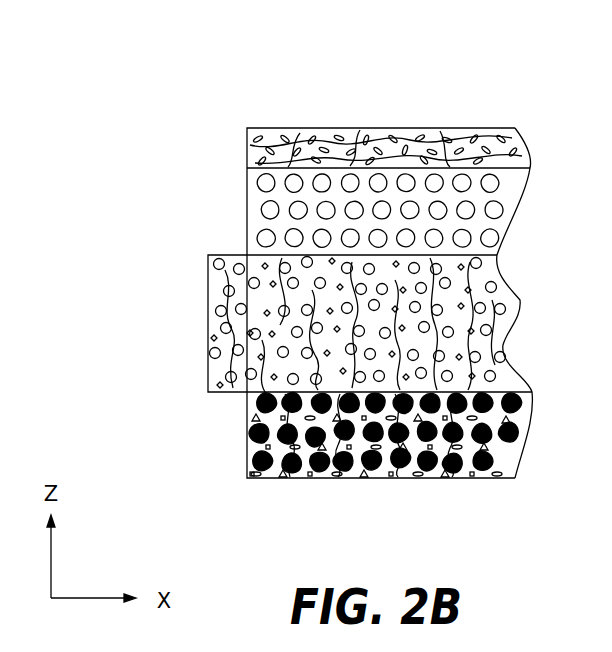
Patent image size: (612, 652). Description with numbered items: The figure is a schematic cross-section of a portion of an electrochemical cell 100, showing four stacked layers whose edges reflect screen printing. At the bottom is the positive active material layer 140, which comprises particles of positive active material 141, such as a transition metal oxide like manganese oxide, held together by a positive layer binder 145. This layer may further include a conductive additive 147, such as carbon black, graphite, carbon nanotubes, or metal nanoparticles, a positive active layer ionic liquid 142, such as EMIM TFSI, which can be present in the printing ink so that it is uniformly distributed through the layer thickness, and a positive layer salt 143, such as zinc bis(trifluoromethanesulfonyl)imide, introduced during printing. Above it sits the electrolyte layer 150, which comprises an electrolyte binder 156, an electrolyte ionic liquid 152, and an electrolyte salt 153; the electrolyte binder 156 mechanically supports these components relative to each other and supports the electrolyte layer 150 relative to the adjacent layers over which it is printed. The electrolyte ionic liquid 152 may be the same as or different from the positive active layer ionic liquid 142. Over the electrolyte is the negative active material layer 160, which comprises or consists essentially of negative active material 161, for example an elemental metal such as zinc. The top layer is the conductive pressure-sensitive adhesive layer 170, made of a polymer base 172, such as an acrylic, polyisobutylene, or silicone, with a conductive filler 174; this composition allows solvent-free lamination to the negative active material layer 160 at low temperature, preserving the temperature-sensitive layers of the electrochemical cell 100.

The electrochemical cell 100 is at (176, 92).
The conductive pressure-sensitive adhesive layer 170 is at (247, 152).
The conductive filler 174 is at (247, 133).
The polymer base 172 is at (298, 132).
The negative active material layer 160 is at (247, 217).
The negative active material 161 is at (247, 240).
The electrolyte layer 150 is at (208, 373).
The electrolyte salt 153 is at (207, 283).
The electrolyte ionic liquid 152 is at (208, 298).
The electrolyte binder 156 is at (250, 332).
The positive active material layer 140 is at (247, 422).
The positive active material 141 is at (247, 440).
The positive layer binder 145 is at (257, 482).
The conductive additive 147 is at (322, 478).
The positive active layer ionic liquid 142 is at (358, 480).
The positive layer salt 143 is at (412, 480).